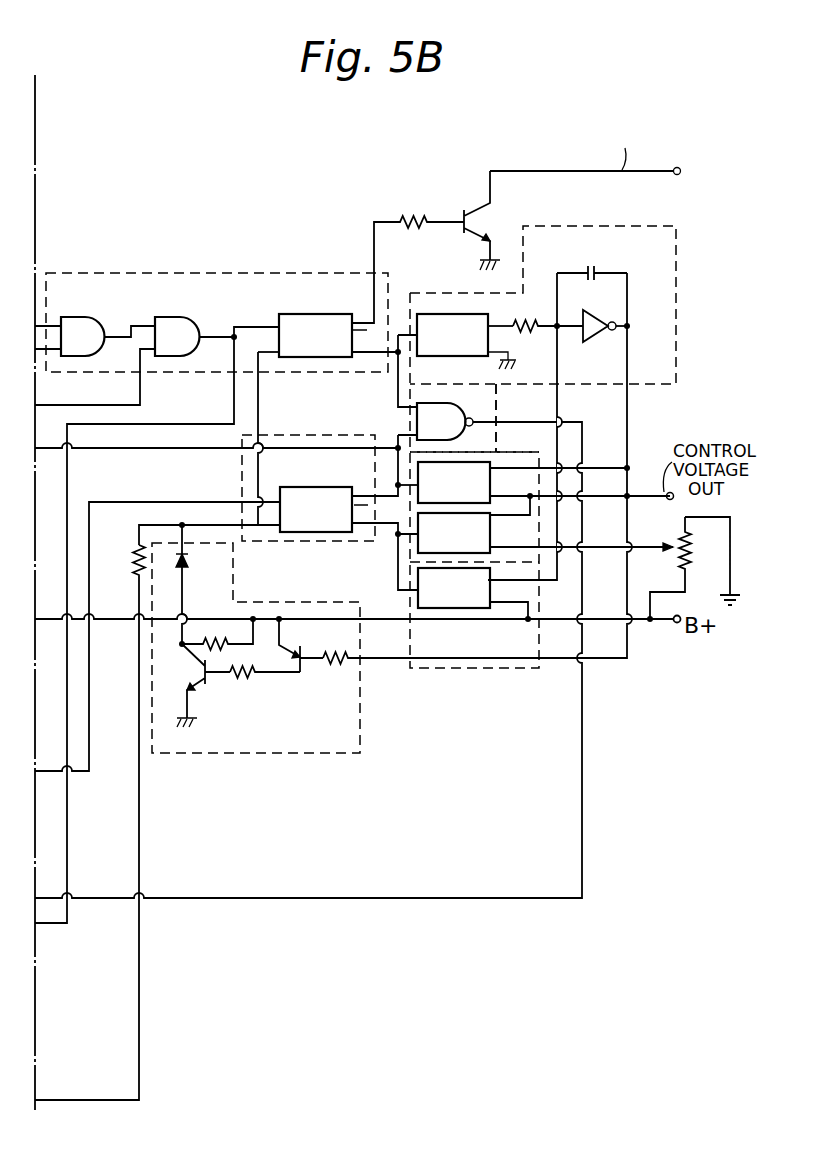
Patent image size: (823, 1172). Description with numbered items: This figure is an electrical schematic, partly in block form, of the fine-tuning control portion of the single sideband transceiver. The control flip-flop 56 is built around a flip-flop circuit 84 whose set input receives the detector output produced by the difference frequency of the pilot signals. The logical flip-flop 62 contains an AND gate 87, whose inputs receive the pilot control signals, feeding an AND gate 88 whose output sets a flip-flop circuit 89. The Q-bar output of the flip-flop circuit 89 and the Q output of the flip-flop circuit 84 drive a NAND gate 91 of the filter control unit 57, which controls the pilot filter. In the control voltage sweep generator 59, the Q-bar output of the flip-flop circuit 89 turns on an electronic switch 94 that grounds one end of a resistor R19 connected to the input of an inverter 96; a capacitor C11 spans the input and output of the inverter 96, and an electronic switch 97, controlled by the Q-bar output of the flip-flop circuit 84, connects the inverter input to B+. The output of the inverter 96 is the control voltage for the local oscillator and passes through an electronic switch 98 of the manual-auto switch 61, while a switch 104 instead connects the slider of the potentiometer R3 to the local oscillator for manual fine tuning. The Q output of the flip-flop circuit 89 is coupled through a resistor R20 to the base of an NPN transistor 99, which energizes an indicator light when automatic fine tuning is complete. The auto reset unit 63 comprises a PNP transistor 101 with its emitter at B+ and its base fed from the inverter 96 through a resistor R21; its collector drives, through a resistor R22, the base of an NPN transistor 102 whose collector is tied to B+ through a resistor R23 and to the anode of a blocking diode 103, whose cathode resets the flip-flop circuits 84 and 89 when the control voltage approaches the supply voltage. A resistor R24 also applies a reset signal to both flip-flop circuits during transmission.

The logical flip-flop 62 is at (265, 273).
The AND gate 87 is at (87, 317).
The AND gate 88 is at (180, 317).
The flip-flop circuit 89 is at (327, 314).
The resistor R20 is at (414, 218).
The NPN transistor 99 is at (484, 226).
The electronic switch 94 is at (432, 314).
The resistor R19 is at (537, 318).
The capacitor C11 is at (590, 268).
The inverter 96 is at (597, 315).
The control voltage sweep generator 59 is at (677, 298).
The NAND gate 91 is at (462, 404).
The filter control unit 57 is at (497, 416).
The manual-auto switch 61 is at (527, 452).
The electronic switch 98 is at (418, 472).
The switch 104 is at (418, 545).
The electronic switch 97 is at (418, 598).
The control flip-flop 56 is at (314, 435).
The flip-flop circuit 84 is at (300, 532).
The auto reset unit 63 is at (280, 753).
The resistor R24 is at (136, 562).
The blocking diode 103 is at (189, 561).
The resistor R23 is at (218, 640).
The NPN transistor 102 is at (196, 673).
The resistor R22 is at (244, 678).
The PNP transistor 101 is at (294, 676).
The resistor R21 is at (336, 666).
The potentiometer R3 is at (687, 553).